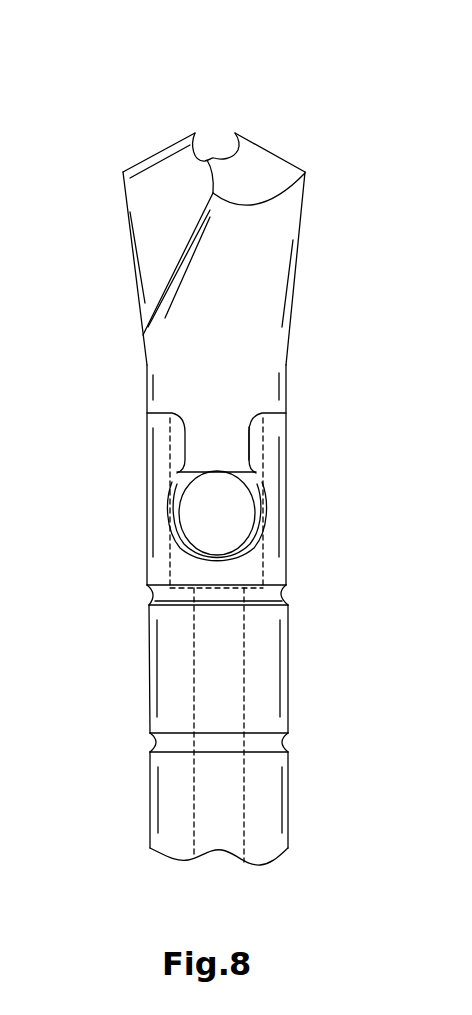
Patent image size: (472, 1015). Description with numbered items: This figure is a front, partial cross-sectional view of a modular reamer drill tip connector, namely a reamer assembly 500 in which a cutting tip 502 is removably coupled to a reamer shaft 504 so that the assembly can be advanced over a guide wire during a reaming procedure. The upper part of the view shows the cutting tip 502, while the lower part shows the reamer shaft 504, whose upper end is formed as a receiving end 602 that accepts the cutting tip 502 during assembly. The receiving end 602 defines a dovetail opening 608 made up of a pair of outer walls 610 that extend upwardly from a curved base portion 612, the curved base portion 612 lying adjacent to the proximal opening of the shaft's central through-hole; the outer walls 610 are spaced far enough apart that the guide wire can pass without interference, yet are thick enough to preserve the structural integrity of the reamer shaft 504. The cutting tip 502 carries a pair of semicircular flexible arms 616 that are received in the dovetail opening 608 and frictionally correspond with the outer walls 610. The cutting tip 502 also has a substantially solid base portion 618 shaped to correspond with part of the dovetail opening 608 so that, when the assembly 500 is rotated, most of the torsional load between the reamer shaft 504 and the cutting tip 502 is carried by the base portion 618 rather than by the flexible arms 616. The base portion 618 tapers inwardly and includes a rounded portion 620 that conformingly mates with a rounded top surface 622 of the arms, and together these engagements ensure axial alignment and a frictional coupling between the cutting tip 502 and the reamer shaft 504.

The reamer assembly 500 is at (110, 118).
The cutting tip 502 is at (267, 172).
The reamer shaft 504 is at (273, 667).
The receiving end 602 is at (245, 476).
The dovetail opening 608 is at (225, 522).
The outer walls 610 is at (285, 450).
The curved base portion 612 is at (243, 587).
The flexible arms 616 is at (242, 540).
The base portion 618 is at (215, 418).
The rounded portion 620 is at (262, 427).
The rounded top surface 622 is at (253, 417).